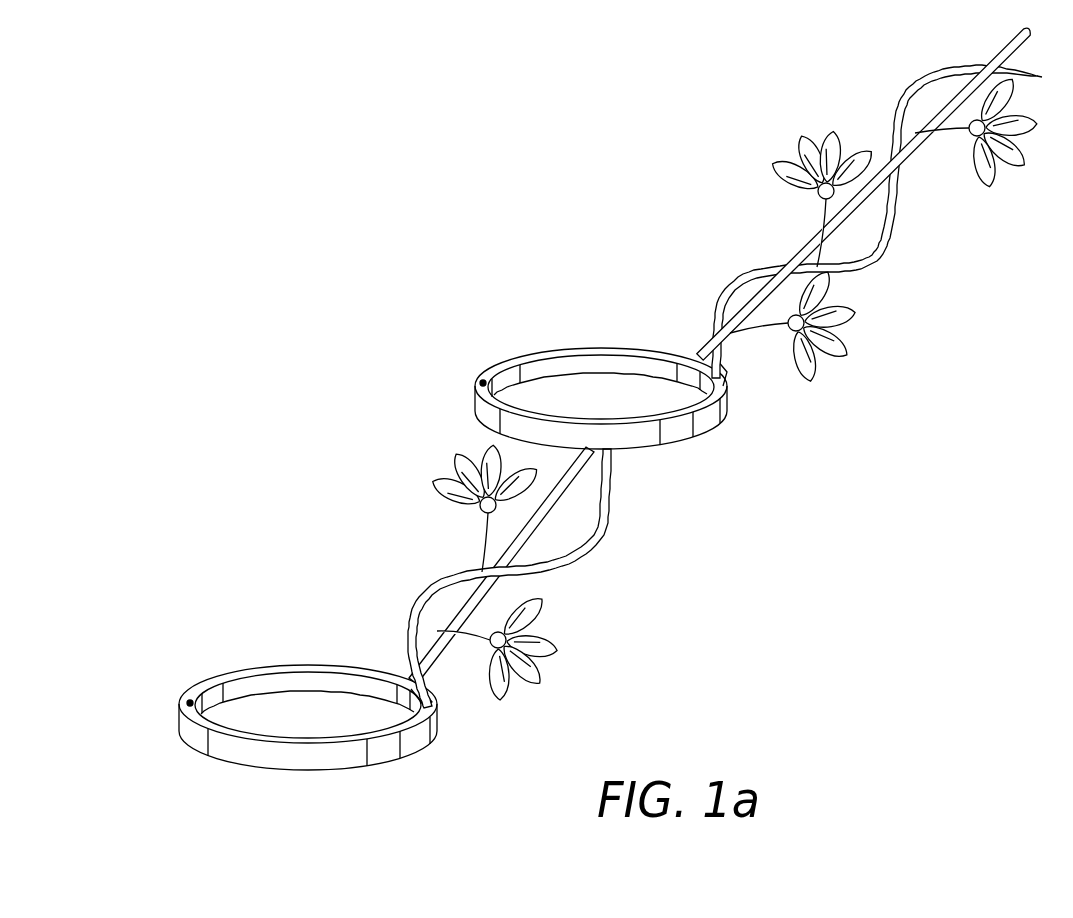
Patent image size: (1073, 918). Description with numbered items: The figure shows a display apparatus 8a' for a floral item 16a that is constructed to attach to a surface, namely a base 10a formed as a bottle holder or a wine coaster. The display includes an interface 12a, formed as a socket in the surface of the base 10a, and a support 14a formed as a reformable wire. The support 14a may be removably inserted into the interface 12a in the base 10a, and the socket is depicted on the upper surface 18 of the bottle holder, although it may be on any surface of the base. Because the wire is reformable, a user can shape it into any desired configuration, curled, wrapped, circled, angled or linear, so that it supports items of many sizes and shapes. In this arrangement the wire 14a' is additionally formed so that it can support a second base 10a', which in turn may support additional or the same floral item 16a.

The display apparatus 8a' is at (312, 330).
The base 10a is at (327, 731).
The second base 10a' is at (632, 411).
The interface 12a is at (440, 722).
The support 14a is at (554, 578).
The wire 14a' is at (877, 221).
The floral item 16a is at (840, 237).
The upper surface 18 is at (191, 700).